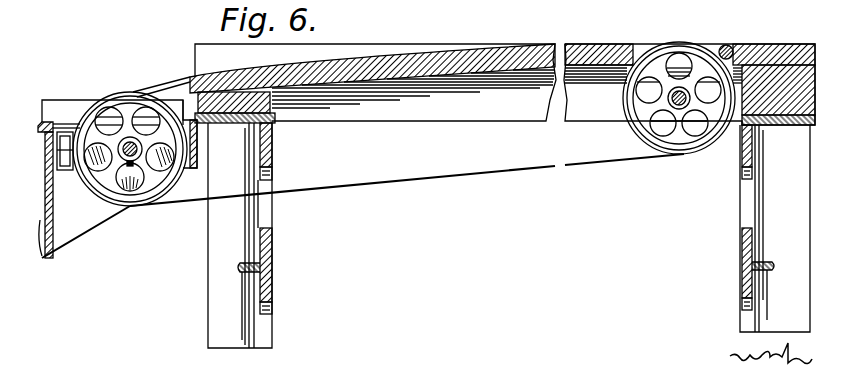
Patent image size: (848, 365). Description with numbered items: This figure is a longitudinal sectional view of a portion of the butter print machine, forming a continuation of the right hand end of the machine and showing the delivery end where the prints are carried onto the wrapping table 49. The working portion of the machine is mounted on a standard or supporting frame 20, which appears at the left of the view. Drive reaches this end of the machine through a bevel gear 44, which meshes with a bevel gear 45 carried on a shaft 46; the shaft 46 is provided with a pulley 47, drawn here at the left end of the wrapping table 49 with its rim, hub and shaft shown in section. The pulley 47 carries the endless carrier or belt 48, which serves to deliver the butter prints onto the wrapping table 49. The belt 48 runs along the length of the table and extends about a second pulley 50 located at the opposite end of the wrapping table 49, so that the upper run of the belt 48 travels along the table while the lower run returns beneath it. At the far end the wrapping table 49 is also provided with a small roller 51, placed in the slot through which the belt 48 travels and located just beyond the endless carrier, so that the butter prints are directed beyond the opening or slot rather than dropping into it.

The standard or supporting frame 20 is at (49, 265).
The bevel gear 44 is at (78, 150).
The bevel gear 45 is at (158, 165).
The shaft 46 is at (131, 141).
The pulley 47 is at (150, 100).
The endless carrier or belt 48 is at (397, 60).
The wrapping table 49 is at (522, 52).
The pulley 50 is at (646, 144).
The small roller 51 is at (728, 45).